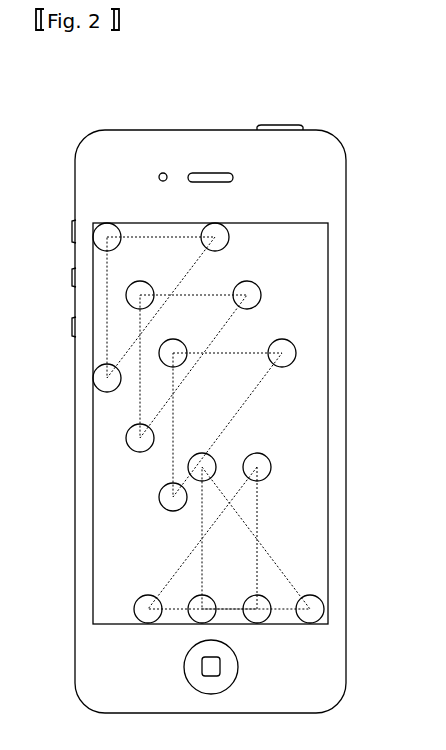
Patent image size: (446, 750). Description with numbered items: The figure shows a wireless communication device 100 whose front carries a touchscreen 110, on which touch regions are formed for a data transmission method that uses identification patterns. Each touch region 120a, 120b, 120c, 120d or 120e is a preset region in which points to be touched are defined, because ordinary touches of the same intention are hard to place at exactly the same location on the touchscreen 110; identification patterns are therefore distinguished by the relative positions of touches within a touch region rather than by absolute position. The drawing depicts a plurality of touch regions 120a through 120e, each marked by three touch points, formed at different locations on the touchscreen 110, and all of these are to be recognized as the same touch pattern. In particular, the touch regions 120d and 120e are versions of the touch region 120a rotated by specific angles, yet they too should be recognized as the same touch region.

The wireless communication device 100 is at (210, 130).
The touchscreen 110 is at (328, 423).
The touch region 120a is at (160, 237).
The touch region 120b is at (217, 295).
The touch region 120c is at (252, 350).
The touch region 120d is at (168, 577).
The touch region 120e is at (287, 578).